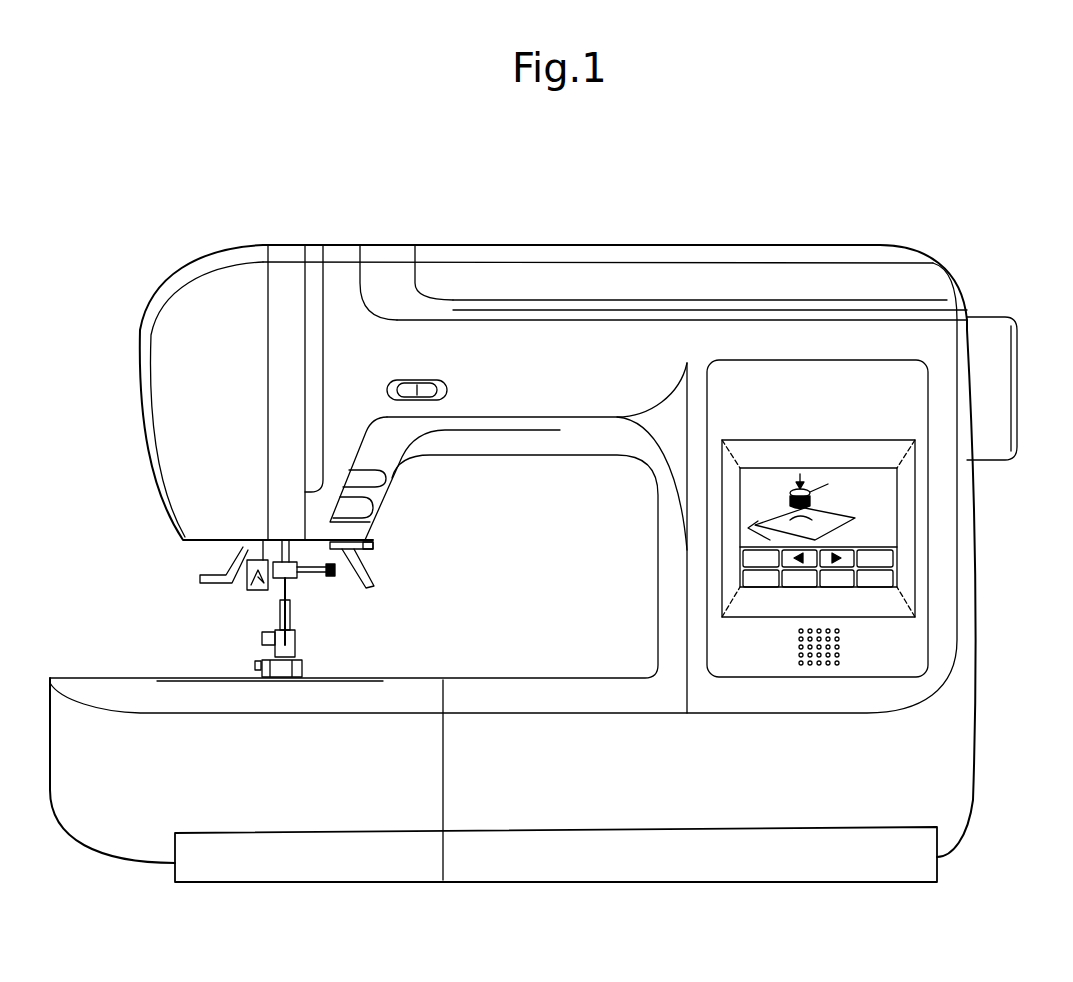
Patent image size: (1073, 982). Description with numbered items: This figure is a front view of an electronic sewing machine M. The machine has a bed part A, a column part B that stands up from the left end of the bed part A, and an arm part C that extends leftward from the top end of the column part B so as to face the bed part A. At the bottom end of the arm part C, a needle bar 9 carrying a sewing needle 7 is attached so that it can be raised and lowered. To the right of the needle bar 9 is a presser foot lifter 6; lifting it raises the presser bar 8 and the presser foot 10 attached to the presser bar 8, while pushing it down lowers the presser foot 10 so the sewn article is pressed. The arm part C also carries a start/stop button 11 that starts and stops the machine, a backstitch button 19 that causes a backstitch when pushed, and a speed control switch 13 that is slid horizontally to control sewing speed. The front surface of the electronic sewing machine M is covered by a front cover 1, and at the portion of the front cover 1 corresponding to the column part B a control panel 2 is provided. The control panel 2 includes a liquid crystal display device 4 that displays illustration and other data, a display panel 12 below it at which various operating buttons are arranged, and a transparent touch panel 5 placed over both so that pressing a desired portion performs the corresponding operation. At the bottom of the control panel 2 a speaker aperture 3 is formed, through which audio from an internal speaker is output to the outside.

The electronic sewing machine M is at (927, 188).
The bed part A is at (940, 802).
The column part B is at (960, 487).
The arm part C is at (703, 280).
The front cover 1 is at (560, 353).
The control panel 2 is at (877, 397).
The speaker aperture 3 is at (840, 655).
The liquid crystal display device 4 is at (853, 510).
The touch panel 5 is at (887, 527).
The presser foot lifter 6 is at (375, 572).
The sewing needle 7 is at (270, 598).
The presser bar 8 is at (296, 613).
The needle bar 9 is at (250, 550).
The presser foot 10 is at (302, 661).
The start/stop button 11 is at (372, 508).
The display panel 12 is at (888, 563).
The speed control switch 13 is at (423, 382).
The backstitch button 19 is at (382, 478).